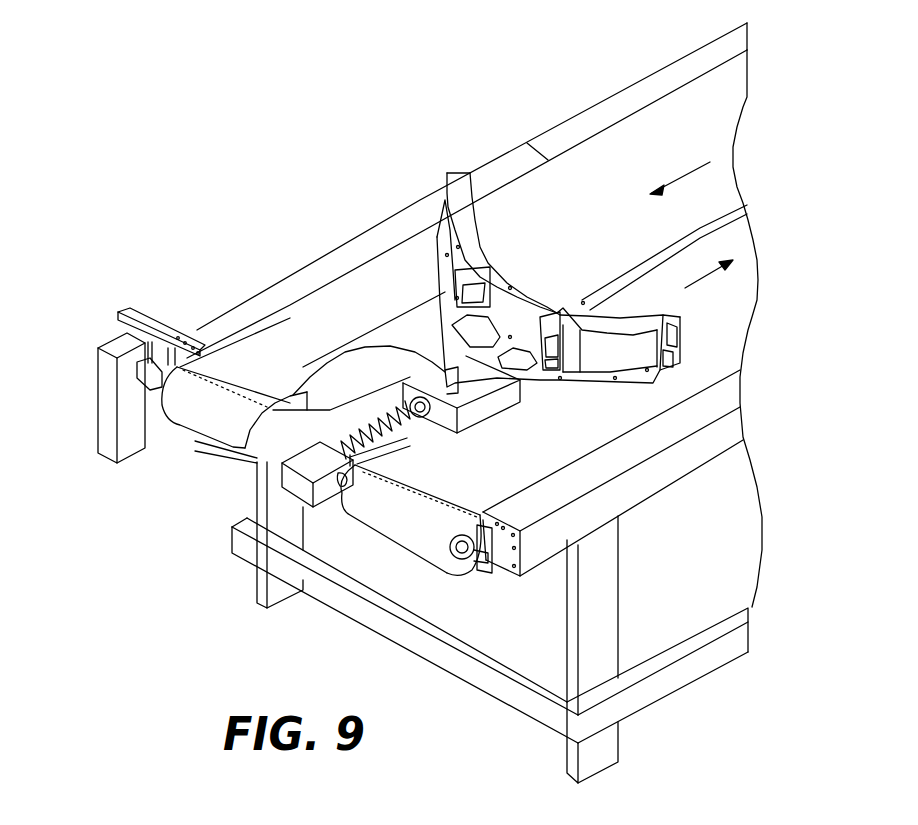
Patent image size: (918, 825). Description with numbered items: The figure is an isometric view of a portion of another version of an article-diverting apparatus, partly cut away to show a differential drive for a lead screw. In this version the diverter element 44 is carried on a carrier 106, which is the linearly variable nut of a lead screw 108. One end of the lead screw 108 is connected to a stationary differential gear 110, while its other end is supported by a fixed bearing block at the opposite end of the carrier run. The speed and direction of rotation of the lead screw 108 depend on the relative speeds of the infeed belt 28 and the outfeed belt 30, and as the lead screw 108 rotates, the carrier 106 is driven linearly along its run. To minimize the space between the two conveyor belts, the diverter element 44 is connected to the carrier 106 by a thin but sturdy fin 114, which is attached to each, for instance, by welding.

The infeed belt 28 is at (353, 278).
The outfeed belt 30 is at (725, 360).
The diverter element 44 is at (467, 232).
The carrier 106 is at (483, 407).
The lead screw 108 is at (430, 427).
The stationary differential gear 110 is at (282, 483).
The fin 114 is at (440, 377).